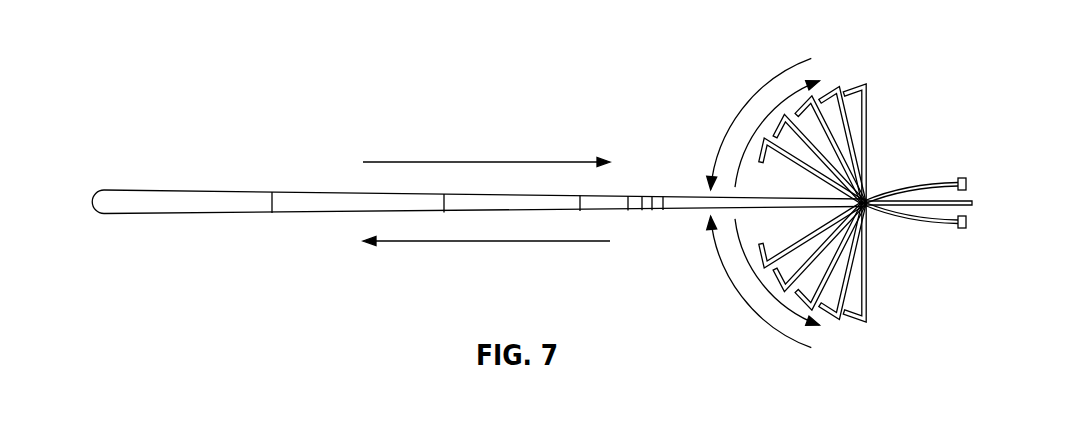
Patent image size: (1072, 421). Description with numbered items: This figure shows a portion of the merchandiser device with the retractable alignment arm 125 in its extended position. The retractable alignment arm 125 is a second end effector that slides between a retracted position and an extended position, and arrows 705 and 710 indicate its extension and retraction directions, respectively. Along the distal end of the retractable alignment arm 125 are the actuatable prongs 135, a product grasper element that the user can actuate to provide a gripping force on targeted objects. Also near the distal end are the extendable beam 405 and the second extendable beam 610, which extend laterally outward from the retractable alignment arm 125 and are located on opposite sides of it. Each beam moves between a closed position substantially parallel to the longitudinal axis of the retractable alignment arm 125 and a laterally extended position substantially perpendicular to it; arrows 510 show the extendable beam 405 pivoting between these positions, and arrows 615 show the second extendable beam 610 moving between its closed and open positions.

The retractable alignment arm 125 is at (228, 190).
The arrow 705 is at (474, 160).
The arrow 710 is at (492, 243).
The arrows 510 is at (755, 92).
The arrows 615 is at (752, 310).
The extendable beam 405 is at (872, 101).
The second extendable beam 610 is at (872, 280).
The actuatable prongs 135 is at (964, 178).